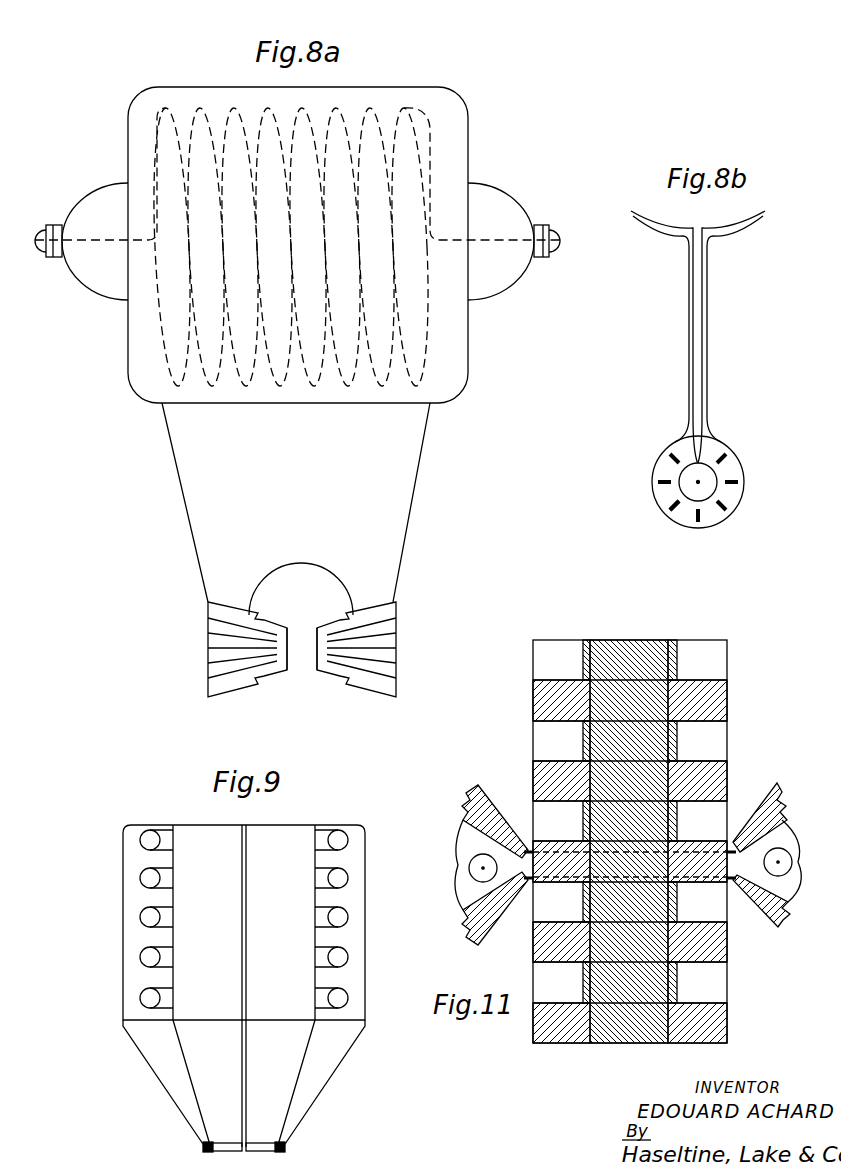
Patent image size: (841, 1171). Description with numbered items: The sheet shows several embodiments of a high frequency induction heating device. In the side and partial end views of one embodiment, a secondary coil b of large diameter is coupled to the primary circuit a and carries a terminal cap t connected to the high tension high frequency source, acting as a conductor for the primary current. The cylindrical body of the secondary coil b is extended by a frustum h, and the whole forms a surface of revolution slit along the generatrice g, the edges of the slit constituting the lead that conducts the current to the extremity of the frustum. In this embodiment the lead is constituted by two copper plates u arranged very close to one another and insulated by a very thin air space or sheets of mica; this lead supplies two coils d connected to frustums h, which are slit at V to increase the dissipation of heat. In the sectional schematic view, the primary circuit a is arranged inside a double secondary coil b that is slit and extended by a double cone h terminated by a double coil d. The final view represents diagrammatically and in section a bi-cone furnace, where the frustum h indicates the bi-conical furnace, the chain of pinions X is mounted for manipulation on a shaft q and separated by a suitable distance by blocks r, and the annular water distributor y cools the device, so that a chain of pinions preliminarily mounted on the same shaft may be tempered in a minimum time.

In FIG. 8A, the secondary coil b is at (453, 386).
In FIG. 9, the secondary coil b is at (123, 890).
In FIG. 8A, the terminal cap t is at (506, 205).
In FIG. 8A, the copper plates u is at (402, 512).
In FIG. 8B, the copper plates u is at (690, 303).
In FIG. 8A, the frustum h is at (231, 681).
In FIG. 8B, the frustum h is at (668, 466).
In FIG. 9, the frustum h is at (152, 1068).
In FIG. 11, the frustum h is at (466, 804).
In FIG. 8A, the slits V is at (368, 648).
In FIG. 8B, the slits V is at (652, 482).
In FIG. 8A, the coil d is at (285, 671).
In FIG. 8B, the coil d is at (676, 492).
In FIG. 9, the coil d is at (205, 1151).
In FIG. 8B, the generatrice slit g is at (701, 441).
In FIG. 9, the generatrice slit g is at (248, 868).
In FIG. 9, the primary circuit a is at (153, 832).
In FIG. 11, the shaft q is at (630, 829).
In FIG. 11, the chain of pinions X is at (716, 786).
In FIG. 11, the blocks r is at (679, 748).
In FIG. 11, the annular water distributor y is at (485, 870).